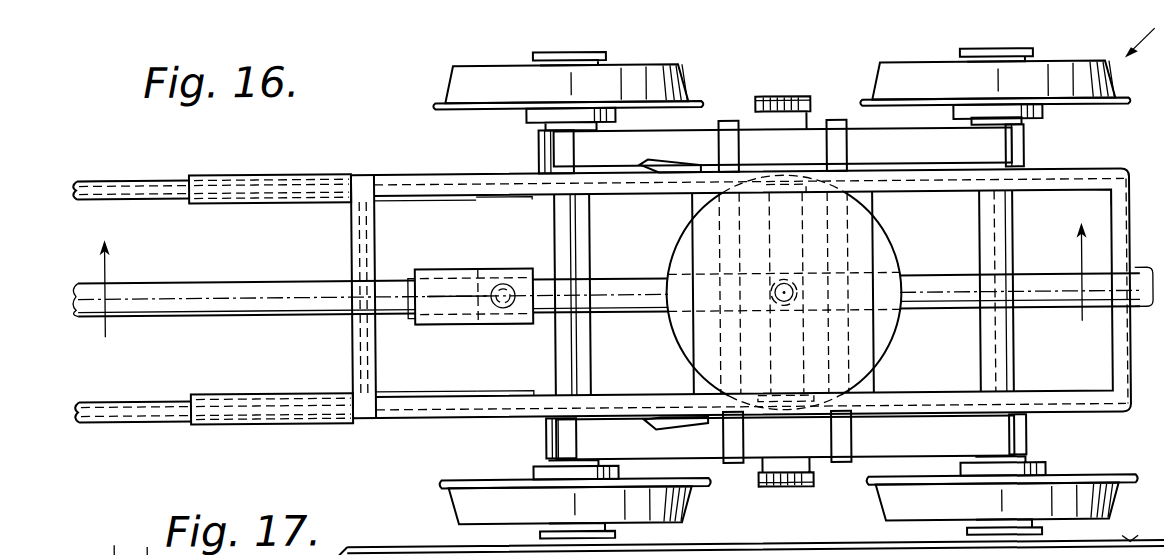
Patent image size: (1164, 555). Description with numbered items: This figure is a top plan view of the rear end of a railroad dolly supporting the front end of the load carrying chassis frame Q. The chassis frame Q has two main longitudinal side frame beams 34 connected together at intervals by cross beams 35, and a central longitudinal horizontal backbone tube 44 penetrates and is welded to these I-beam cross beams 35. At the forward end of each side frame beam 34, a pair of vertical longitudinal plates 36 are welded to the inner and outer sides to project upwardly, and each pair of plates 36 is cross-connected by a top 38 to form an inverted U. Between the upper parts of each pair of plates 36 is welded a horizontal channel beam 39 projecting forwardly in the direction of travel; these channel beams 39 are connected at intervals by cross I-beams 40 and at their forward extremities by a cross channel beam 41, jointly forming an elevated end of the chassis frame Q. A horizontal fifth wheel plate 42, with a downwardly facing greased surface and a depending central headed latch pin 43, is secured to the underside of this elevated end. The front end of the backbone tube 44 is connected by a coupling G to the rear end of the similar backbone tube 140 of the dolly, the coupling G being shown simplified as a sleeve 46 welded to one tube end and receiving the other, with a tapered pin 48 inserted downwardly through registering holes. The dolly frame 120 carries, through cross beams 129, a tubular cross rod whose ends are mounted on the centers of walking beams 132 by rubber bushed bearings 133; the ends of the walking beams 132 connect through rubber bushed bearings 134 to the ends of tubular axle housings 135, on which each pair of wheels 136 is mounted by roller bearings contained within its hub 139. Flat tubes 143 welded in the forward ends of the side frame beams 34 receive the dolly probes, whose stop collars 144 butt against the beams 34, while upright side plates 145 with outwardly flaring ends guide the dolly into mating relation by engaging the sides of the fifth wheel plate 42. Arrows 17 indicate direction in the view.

In FIG. 16, the direction arrow 17 is at (593, 288).
In FIG. 16, the main longitudinal side frame beam 34 is at (133, 189).
In FIG. 16, the cross beam 35 is at (350, 249).
In FIG. 16, the vertical longitudinal plate 36 is at (376, 171).
In FIG. 17, the vertical longitudinal plate 36 is at (390, 551).
In FIG. 16, the top 38 is at (305, 141).
In FIG. 16, the horizontal channel beam 39 is at (423, 182).
In FIG. 16, the cross I-beam 40 is at (705, 228).
In FIG. 16, the cross channel beam 41 is at (1118, 212).
In FIG. 16, the fifth wheel plate 42 is at (680, 249).
In FIG. 16, the headed latch pin 43 is at (787, 277).
In FIG. 16, the backbone tube 44 is at (227, 275).
In FIG. 16, the sleeve 46 is at (440, 323).
In FIG. 16, the tapered pin 48 is at (506, 281).
In FIG. 16, the dolly frame 120 is at (1028, 152).
In FIG. 16, the cross beam 129 is at (727, 120).
In FIG. 16, the walking beam 132 is at (872, 148).
In FIG. 16, the rubber bushed bearing 133 is at (805, 97).
In FIG. 16, the rubber bushed bearing 134 is at (571, 150).
In FIG. 16, the tubular axle housing 135 is at (583, 327).
In FIG. 16, the wheel 136 is at (484, 70).
In FIG. 16, the hub 139 is at (527, 111).
In FIG. 16, the backbone tube 140 is at (957, 262).
In FIG. 16, the flat tube 143 is at (390, 199).
In FIG. 16, the stop collar 144 is at (493, 196).
In FIG. 16, the upright side plate 145 is at (693, 167).
In FIG. 16, the coupling G is at (440, 267).
In FIG. 16, the chassis frame Q is at (119, 175).